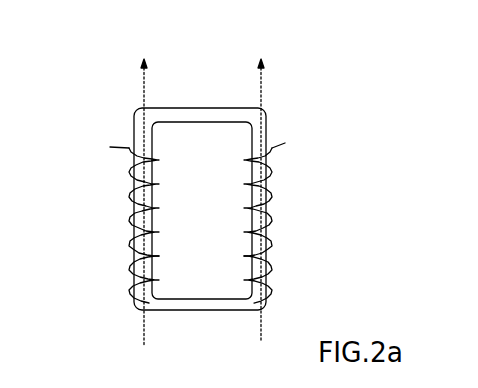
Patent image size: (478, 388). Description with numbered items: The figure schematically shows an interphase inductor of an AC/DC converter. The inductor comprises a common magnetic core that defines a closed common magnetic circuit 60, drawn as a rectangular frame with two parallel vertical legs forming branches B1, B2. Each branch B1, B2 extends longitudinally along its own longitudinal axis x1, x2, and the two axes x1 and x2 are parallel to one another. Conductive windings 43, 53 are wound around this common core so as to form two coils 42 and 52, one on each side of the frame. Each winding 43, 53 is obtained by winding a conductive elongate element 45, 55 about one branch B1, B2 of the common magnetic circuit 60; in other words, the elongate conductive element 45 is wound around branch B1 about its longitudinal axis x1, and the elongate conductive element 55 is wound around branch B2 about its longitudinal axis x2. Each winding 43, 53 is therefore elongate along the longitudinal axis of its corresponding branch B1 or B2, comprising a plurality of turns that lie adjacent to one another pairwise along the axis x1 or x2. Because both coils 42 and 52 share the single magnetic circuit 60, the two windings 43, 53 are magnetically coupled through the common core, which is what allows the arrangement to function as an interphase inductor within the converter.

The common magnetic circuit 60 is at (140, 118).
The coil 42 is at (99, 226).
The branch B1 is at (117, 226).
The conductive winding 43 is at (134, 251).
The conductive elongate element 45 is at (134, 289).
The coil 52 is at (308, 228).
The branch B2 is at (287, 228).
The conductive winding 53 is at (272, 228).
The conductive elongate element 55 is at (270, 284).
The longitudinal axis x1 is at (143, 193).
The longitudinal axis x2 is at (260, 192).